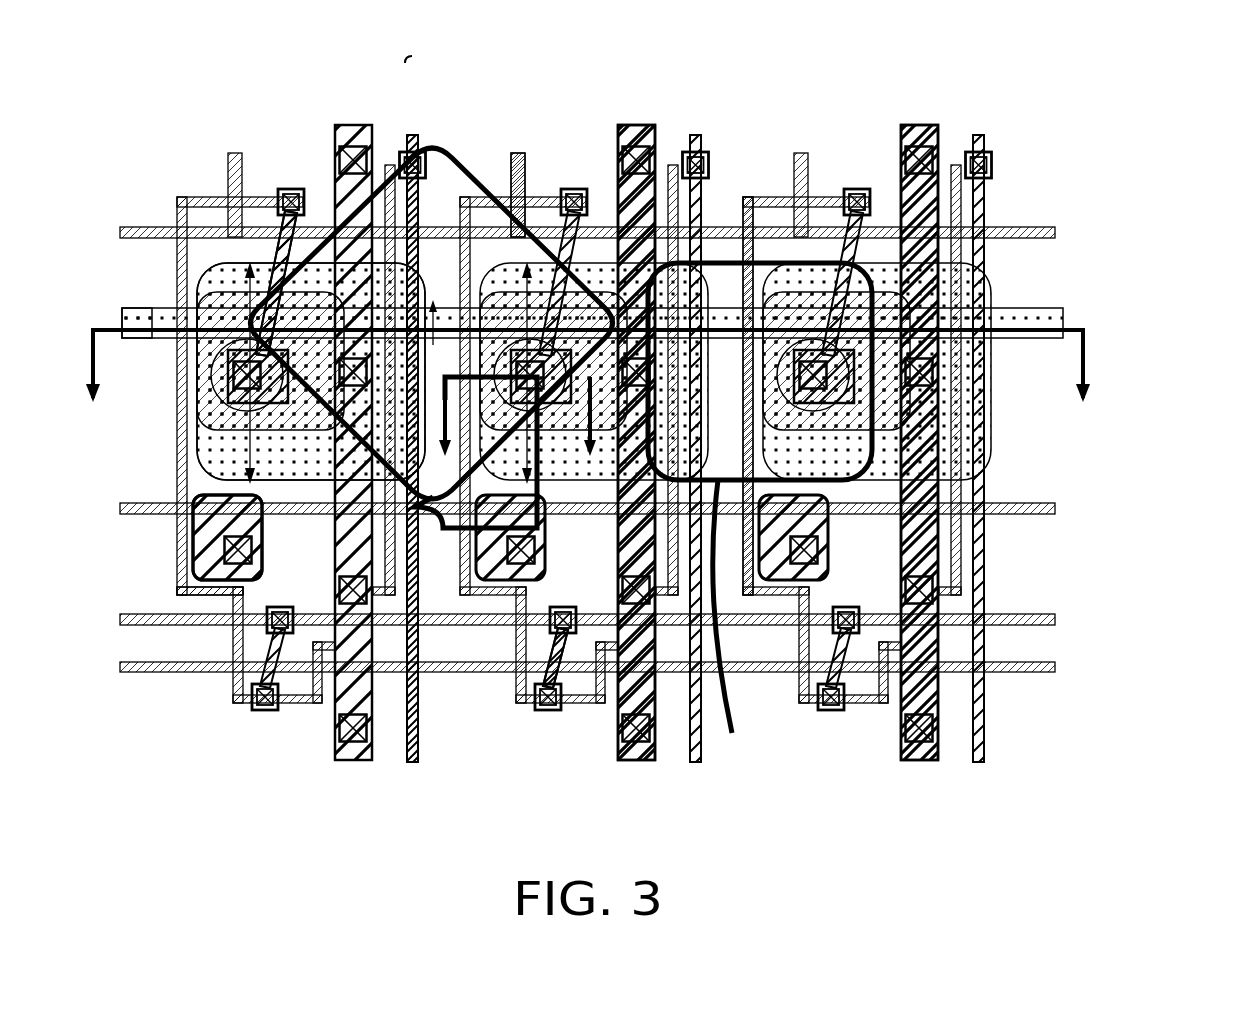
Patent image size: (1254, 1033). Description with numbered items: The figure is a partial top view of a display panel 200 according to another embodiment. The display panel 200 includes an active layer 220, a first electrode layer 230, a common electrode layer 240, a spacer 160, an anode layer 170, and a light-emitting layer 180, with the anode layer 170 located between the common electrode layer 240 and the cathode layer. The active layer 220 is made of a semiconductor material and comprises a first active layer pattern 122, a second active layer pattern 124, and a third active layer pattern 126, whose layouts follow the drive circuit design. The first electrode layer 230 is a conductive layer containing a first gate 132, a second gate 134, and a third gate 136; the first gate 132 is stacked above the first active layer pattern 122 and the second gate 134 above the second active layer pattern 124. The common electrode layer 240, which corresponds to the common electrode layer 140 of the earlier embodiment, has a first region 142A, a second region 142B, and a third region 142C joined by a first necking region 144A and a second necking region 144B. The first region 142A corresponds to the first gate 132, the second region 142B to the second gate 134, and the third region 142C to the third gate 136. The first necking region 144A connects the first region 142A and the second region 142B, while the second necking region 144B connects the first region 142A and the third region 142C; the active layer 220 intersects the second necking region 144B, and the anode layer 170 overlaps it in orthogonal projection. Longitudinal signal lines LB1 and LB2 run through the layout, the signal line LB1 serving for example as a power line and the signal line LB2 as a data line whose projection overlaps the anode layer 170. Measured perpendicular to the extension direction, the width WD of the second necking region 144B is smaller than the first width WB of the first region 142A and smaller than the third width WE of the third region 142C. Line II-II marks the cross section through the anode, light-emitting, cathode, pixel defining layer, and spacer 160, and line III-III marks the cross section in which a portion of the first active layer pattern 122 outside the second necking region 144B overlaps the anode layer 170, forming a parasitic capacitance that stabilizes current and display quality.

The first active layer pattern 122 is at (485, 592).
The second active layer pattern 124 is at (775, 592).
The third active layer pattern 126 is at (205, 592).
The active layer 220 is at (210, 591).
The first gate 132 is at (567, 695).
The second gate 134 is at (940, 265).
The third gate 136 is at (237, 290).
The first electrode layer 230 is at (137, 323).
The common electrode layer 140 is at (840, 63).
The common electrode layer 240 is at (408, 59).
The first region 142A is at (608, 255).
The second region 142B is at (893, 210).
The third region 142C is at (400, 135).
The first necking region 144A is at (727, 305).
The second necking region 144B is at (462, 290).
The spacer 160 is at (731, 733).
The anode layer 170 is at (262, 297).
The light-emitting layer 180 is at (318, 205).
The display panel 200 is at (1248, 804).
The signal line LB1 is at (636, 762).
The signal line LB2 is at (695, 762).
The width WD is at (437, 300).
The third width WE is at (250, 443).
The first width WB is at (535, 470).
The line II- II is at (588, 386).
The line III- III is at (516, 431).